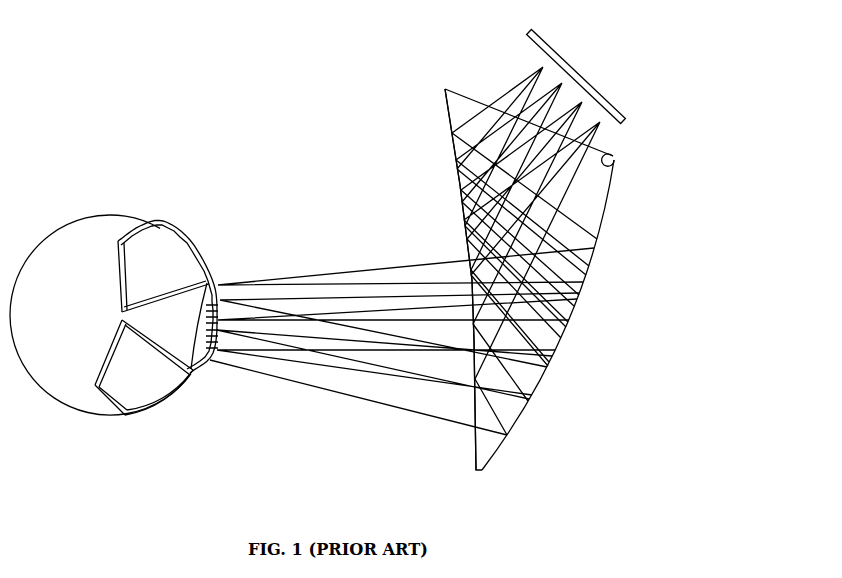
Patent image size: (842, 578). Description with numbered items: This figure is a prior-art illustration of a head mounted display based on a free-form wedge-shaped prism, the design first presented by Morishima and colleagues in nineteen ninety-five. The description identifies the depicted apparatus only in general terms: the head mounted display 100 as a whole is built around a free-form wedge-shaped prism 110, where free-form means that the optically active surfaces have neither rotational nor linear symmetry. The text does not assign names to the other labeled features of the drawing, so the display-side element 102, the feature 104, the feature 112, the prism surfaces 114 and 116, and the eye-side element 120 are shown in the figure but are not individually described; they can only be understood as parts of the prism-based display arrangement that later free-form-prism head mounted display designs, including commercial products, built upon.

The prior art near-eye display system 100 is at (138, 83).
The image display / microdisplay 102 is at (566, 63).
The light rays from display 104 is at (523, 80).
The freeform prism 110 is at (580, 210).
The prism edge feature 112 is at (615, 160).
The first (eye-side) surface of prism 114 is at (460, 170).
The second (reflective) surface of prism 116 is at (549, 355).
The eye of viewer 120 is at (80, 233).